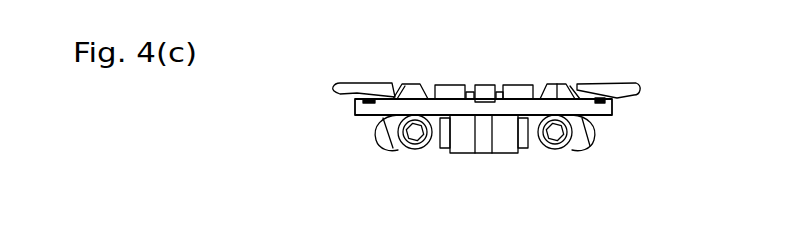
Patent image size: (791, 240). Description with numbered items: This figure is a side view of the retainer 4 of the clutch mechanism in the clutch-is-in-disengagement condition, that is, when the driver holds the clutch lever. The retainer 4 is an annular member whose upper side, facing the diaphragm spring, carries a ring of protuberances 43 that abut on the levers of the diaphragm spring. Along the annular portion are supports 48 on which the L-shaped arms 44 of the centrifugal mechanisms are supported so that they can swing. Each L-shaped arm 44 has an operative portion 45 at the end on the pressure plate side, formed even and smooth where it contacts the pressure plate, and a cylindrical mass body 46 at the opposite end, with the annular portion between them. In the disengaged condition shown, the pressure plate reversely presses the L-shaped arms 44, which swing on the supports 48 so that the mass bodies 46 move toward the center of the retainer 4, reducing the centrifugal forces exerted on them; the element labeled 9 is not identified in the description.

The retainer 4 is at (531, 109).
The fixing screw 9 is at (401, 155).
The protuberance 43 is at (527, 83).
The L-shaped arm 44 is at (612, 88).
The operative portion 45 is at (627, 82).
The mass body 46 is at (502, 142).
The support 48 is at (582, 89).